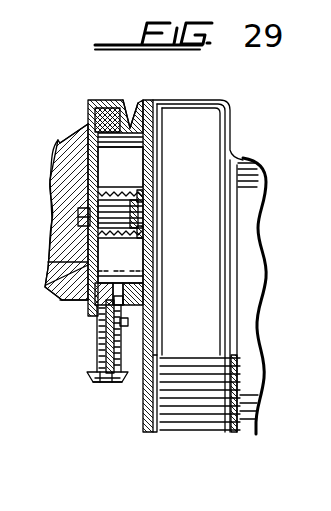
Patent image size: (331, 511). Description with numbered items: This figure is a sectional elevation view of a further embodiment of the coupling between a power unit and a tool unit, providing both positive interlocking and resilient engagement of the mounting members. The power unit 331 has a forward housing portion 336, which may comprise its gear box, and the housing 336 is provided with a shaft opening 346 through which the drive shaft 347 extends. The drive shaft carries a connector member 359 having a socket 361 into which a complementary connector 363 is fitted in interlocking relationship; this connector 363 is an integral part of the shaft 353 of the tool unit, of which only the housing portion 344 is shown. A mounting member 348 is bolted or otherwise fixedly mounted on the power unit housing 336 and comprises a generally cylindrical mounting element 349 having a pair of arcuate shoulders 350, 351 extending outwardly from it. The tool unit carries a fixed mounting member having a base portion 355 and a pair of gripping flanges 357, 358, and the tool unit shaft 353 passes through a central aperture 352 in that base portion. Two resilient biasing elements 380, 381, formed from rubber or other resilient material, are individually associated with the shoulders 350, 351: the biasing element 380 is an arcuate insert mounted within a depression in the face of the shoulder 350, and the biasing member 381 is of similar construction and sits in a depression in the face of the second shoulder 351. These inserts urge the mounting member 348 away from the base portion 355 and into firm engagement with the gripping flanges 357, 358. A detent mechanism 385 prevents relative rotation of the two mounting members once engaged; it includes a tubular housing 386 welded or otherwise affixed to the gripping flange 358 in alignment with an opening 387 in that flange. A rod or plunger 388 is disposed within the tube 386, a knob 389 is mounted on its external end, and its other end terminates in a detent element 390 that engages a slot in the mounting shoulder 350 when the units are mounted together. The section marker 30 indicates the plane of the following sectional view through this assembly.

The section line 30 is at (97, 95).
The power unit 331 is at (255, 162).
The forward housing portion 336 is at (199, 113).
The housing portion 344 is at (66, 150).
The shaft opening 346 is at (148, 200).
The drive shaft 347 is at (150, 214).
The mounting member 348 is at (133, 122).
The mounting element 349 is at (118, 132).
The arcuate shoulder 350 is at (128, 307).
The arcuate shoulder 351 is at (92, 108).
The central aperture 352 is at (80, 223).
The tool unit shaft 353 is at (85, 209).
The base portion 355 is at (92, 290).
The gripping flange 357 is at (133, 98).
The gripping flange 358 is at (93, 330).
The connector member 359 is at (150, 226).
The socket 361 is at (150, 206).
The connector 363 is at (45, 262).
The resilient biasing element 380 is at (93, 312).
The resilient biasing member 381 is at (90, 124).
The detent mechanism 385 is at (104, 379).
The tubular housing 386 is at (83, 386).
The opening 387 is at (130, 327).
The rod or plunger 388 is at (88, 398).
The knob 389 is at (106, 374).
The detent element 390 is at (112, 302).